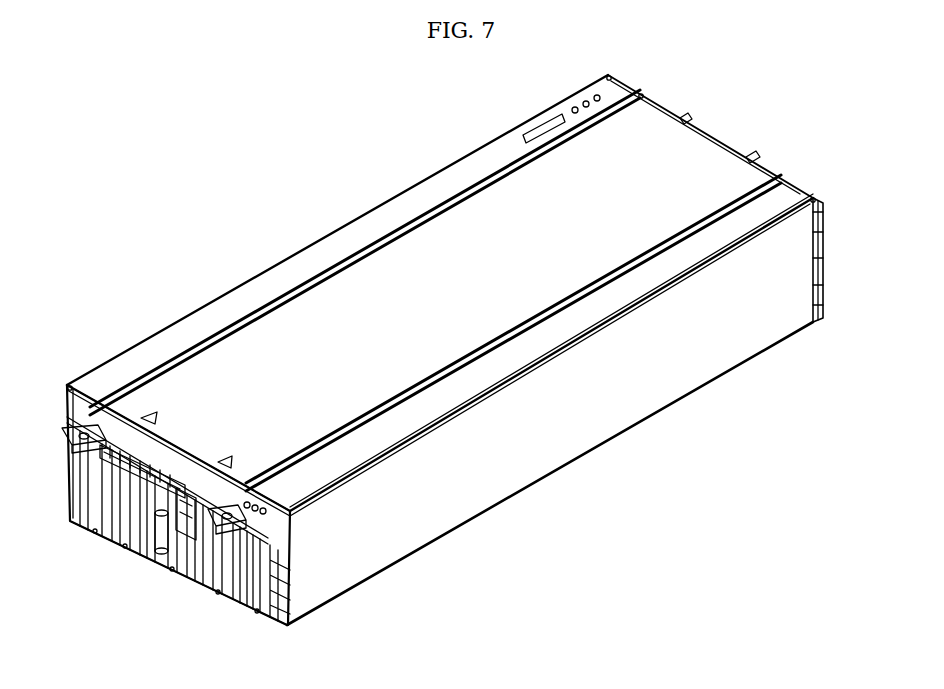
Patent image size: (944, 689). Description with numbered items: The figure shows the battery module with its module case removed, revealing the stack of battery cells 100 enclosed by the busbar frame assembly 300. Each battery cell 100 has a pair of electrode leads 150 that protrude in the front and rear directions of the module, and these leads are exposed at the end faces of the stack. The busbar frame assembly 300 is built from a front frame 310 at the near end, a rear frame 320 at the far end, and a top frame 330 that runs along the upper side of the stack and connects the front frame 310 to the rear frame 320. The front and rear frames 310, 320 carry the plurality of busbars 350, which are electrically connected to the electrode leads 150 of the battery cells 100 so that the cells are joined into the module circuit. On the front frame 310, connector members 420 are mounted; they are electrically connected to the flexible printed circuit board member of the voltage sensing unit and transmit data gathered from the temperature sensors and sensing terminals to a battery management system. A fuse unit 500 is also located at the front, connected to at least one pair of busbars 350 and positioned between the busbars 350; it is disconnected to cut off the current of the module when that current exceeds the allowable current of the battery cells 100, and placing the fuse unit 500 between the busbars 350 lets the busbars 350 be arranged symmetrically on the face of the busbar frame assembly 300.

The battery cells 100 is at (464, 371).
The busbar frame assembly 300 is at (338, 229).
The top frame 330 is at (220, 318).
The rear frame 320 is at (823, 257).
The front frame 310 is at (268, 592).
The connector members 420 is at (128, 533).
The fuse unit 500 is at (151, 543).
The busbars 350 is at (160, 573).
The electrode leads 150 is at (183, 557).